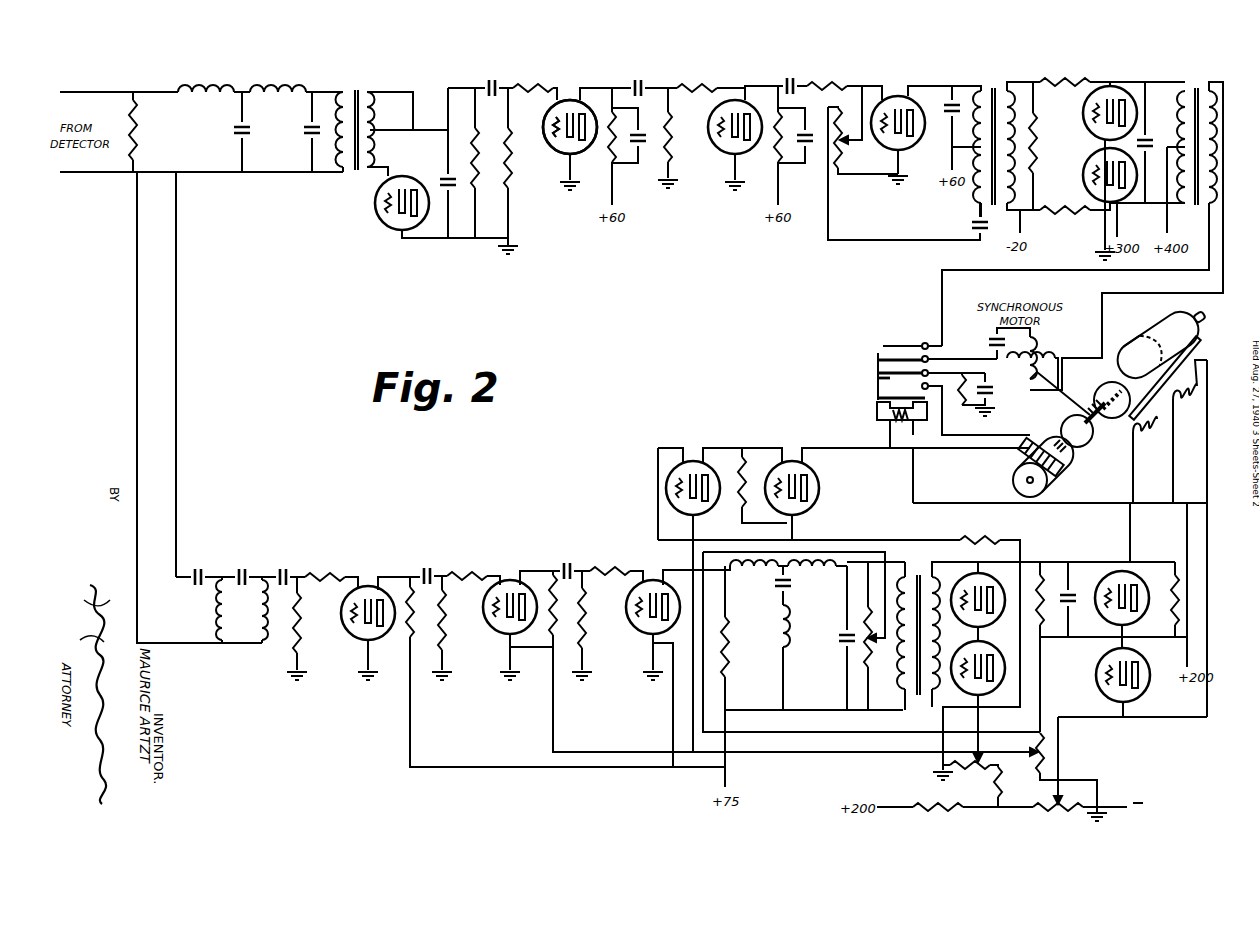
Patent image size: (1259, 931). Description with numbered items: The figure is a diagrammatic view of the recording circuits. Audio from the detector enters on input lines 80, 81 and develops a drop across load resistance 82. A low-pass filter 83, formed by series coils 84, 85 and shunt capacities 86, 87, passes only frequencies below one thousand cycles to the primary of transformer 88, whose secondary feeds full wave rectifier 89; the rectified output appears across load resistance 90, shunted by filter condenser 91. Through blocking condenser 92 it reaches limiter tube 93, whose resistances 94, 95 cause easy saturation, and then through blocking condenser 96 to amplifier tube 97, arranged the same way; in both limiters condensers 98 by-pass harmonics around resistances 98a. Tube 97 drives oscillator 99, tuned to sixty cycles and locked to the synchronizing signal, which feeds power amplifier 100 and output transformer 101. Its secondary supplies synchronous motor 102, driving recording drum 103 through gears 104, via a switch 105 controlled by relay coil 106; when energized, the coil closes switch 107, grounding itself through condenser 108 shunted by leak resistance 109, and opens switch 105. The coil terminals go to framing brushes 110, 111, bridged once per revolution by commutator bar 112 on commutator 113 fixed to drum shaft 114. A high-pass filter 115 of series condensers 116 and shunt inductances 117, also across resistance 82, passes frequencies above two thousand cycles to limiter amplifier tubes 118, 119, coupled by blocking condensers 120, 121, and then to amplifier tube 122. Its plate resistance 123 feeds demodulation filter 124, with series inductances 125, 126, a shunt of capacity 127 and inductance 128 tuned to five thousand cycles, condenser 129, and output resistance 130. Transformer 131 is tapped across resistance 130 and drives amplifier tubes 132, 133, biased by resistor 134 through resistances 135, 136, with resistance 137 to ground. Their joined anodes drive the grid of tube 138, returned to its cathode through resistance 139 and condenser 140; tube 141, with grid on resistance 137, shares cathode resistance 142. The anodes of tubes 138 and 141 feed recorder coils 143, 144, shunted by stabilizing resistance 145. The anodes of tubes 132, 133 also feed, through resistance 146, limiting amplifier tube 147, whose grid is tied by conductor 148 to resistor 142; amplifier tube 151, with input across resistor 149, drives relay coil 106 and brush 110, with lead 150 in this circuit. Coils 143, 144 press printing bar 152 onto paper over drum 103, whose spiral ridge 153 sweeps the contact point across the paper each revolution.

The input line 80 is at (93, 90).
The input line 81 is at (93, 173).
The load resistance 82 is at (142, 143).
The low-pass filter 83 is at (204, 127).
The series coil 84 is at (213, 86).
The series coil 85 is at (278, 86).
The shunt capacity 86 is at (238, 138).
The shunt capacity 87 is at (306, 138).
The transformer 88 is at (360, 86).
The full wave rectifier 89 is at (374, 220).
The load resistance 90 is at (474, 130).
The filter condenser 91 is at (451, 188).
The blocking condenser 92 is at (498, 78).
The limiter tube 93 is at (572, 98).
The resistance 94 is at (512, 150).
The resistance 95 is at (533, 82).
The blocking condenser 96 is at (642, 78).
The amplifier tube 97 is at (737, 98).
The condenser 98 is at (635, 150).
The resistance 98a is at (606, 150).
The oscillator 99 is at (901, 96).
The power amplifier 100 is at (1117, 171).
The output transformer 101 is at (1192, 85).
The synchronous motor 102 is at (1046, 348).
The recording drum 103 is at (1175, 322).
The gears 104 is at (1100, 392).
The switch 105 is at (882, 354).
The relay coil 106 is at (876, 412).
The switch 107 is at (876, 379).
The condenser 108 is at (990, 394).
The leak resistance 109 is at (960, 410).
The framing brush 110 is at (1025, 452).
The framing brush 111 is at (1060, 440).
The commutator bar 112 is at (1082, 447).
The commutator 113 is at (1052, 476).
The drum shaft 114 is at (1100, 418).
The high-pass filter 115 is at (235, 610).
The series condenser 116 is at (242, 565).
The shunt inductance 117 is at (256, 644).
The limiter amplifier tube 118 is at (370, 586).
The limiter amplifier tube 119 is at (512, 580).
The blocking condenser 120 is at (428, 565).
The blocking condenser 121 is at (567, 562).
The amplifier tube 122 is at (657, 580).
The resistance 123 is at (731, 648).
The demodulation filter 124 is at (810, 661).
The series inductance 125 is at (749, 572).
The series inductance 126 is at (804, 572).
The capacity 127 is at (790, 585).
The inductance 128 is at (778, 625).
The condenser 129 is at (845, 631).
The resistance 130 is at (847, 676).
The transformer 131 is at (912, 572).
The amplifier tube 132 is at (975, 573).
The amplifier tube 133 is at (985, 700).
The biasing resistor 134 is at (970, 772).
The resistance 135 is at (1002, 780).
The resistance 136 is at (930, 810).
The resistance 137 is at (1060, 812).
The tube 138 is at (1118, 571).
The resistance 139 is at (1045, 572).
The condenser 140 is at (1072, 604).
The tube 141 is at (1123, 704).
The resistance 142 is at (1048, 752).
The recorder coil 143 is at (1150, 427).
The recorder coil 144 is at (1184, 394).
The stabilizing resistance 145 is at (1170, 610).
The resistance 146 is at (997, 617).
The limiting amplifier tube 147 is at (697, 458).
The conductor 148 is at (812, 752).
The resistor 149 is at (742, 455).
The lead 150 is at (790, 536).
The amplifier tube 151 is at (795, 458).
The printing bar 152 is at (1199, 351).
The spiral ridge 153 is at (1140, 360).